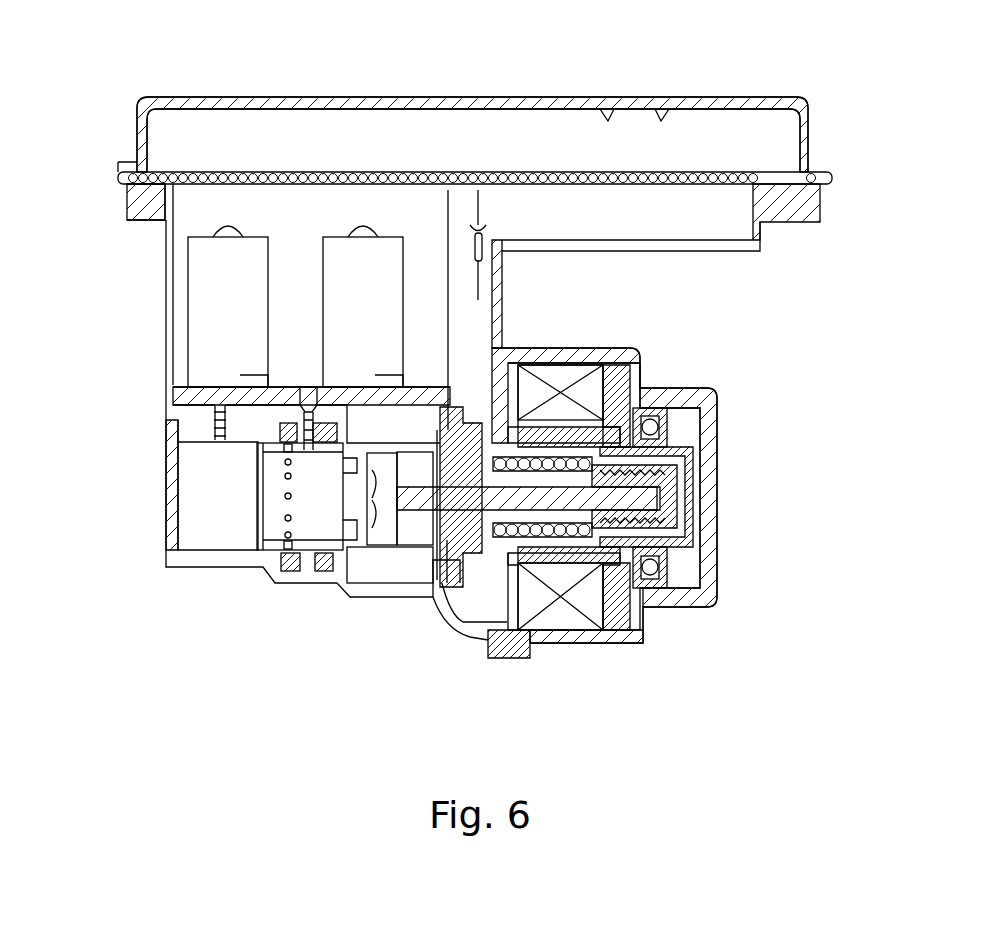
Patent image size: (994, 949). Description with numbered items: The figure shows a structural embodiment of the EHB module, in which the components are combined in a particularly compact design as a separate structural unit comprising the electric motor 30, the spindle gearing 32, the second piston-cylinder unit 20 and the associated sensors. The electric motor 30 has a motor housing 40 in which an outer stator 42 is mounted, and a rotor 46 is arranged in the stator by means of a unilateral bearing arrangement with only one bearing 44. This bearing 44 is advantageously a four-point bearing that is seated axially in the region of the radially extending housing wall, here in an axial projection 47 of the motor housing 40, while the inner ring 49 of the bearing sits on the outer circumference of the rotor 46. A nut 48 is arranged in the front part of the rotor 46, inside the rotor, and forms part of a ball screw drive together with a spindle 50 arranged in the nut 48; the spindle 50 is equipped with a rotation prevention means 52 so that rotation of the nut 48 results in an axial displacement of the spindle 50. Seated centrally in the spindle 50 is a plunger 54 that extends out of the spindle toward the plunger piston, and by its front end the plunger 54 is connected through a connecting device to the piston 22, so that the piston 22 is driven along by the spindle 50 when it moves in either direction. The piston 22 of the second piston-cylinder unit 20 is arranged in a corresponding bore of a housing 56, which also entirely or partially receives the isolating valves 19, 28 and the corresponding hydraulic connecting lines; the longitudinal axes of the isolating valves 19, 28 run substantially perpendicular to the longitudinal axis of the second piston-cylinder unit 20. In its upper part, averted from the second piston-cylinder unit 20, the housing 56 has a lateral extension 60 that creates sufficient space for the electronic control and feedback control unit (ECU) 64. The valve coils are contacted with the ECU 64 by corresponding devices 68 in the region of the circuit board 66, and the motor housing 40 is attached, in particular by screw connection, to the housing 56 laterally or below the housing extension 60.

The isolating valve 19 is at (212, 273).
The isolating valve 28 is at (350, 358).
The second piston-cylinder unit 20 is at (303, 580).
The piston 22 is at (360, 565).
The electric motor 30 is at (640, 378).
The spindle gearing 32 is at (645, 607).
The motor housing 40 is at (574, 650).
The outer stator 42 is at (606, 414).
The bearing 44 is at (675, 413).
The rotor 46 is at (668, 567).
The axial projection 47 is at (708, 485).
The nut 48 is at (588, 366).
The inner ring 49 is at (697, 440).
The spindle 50 is at (690, 512).
The rotation prevention means 52 is at (448, 600).
The plunger 54 is at (408, 560).
The housing 56 is at (165, 468).
The lateral extension 60 is at (718, 252).
The electronic control and feedback control unit (ECU) 64 is at (738, 135).
The circuit board 66 is at (540, 172).
The contacting devices 68 is at (470, 174).